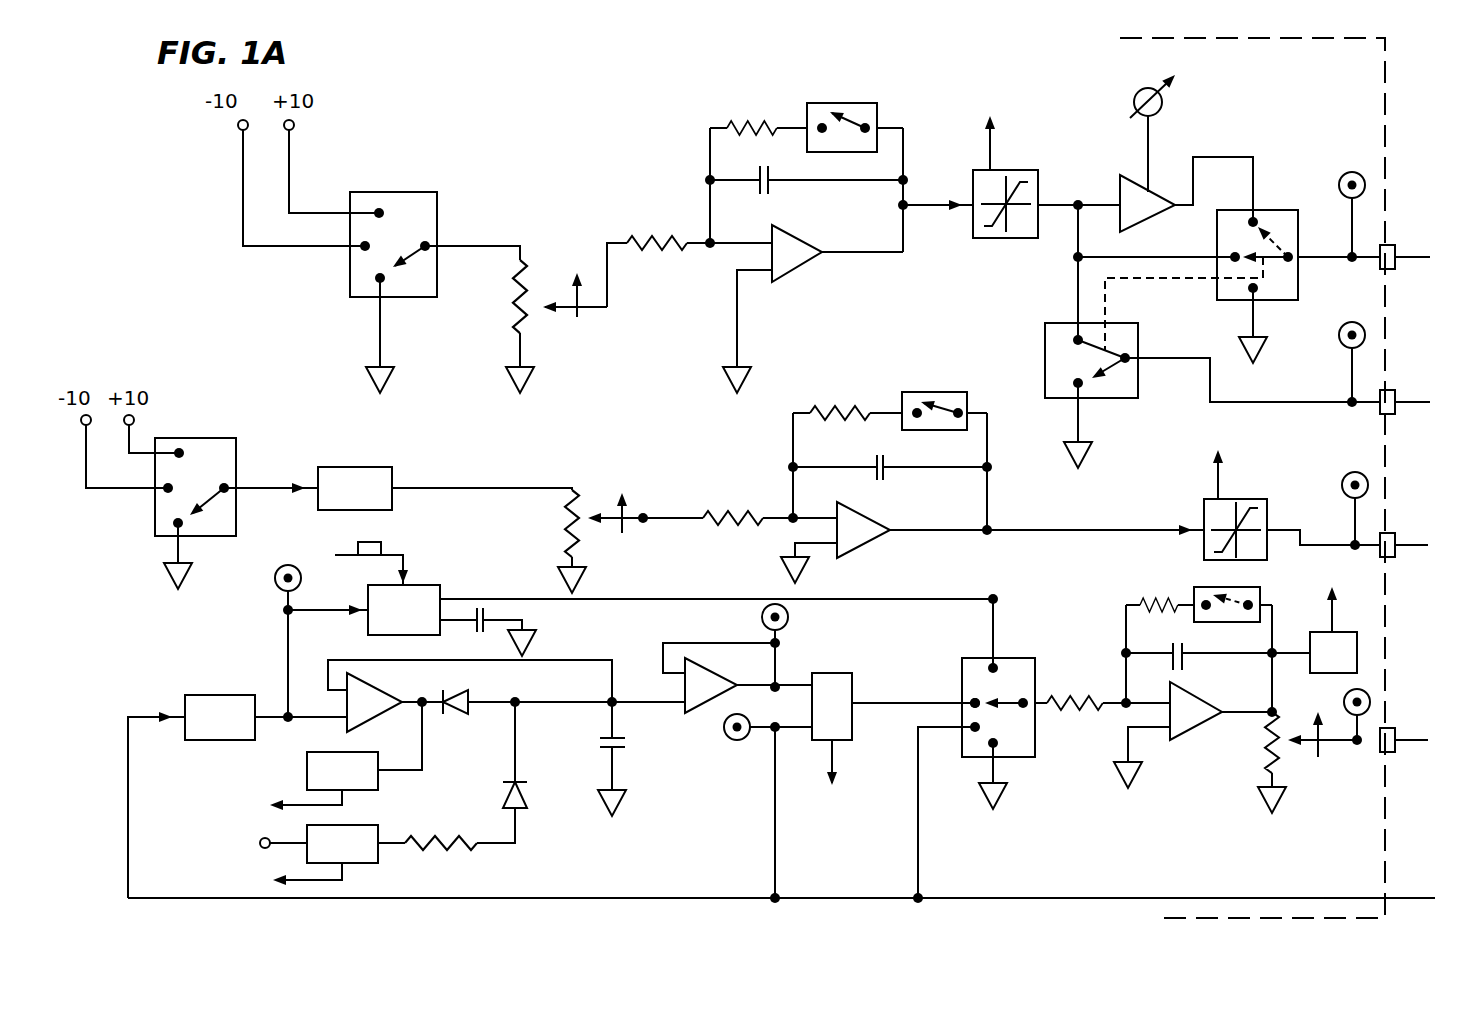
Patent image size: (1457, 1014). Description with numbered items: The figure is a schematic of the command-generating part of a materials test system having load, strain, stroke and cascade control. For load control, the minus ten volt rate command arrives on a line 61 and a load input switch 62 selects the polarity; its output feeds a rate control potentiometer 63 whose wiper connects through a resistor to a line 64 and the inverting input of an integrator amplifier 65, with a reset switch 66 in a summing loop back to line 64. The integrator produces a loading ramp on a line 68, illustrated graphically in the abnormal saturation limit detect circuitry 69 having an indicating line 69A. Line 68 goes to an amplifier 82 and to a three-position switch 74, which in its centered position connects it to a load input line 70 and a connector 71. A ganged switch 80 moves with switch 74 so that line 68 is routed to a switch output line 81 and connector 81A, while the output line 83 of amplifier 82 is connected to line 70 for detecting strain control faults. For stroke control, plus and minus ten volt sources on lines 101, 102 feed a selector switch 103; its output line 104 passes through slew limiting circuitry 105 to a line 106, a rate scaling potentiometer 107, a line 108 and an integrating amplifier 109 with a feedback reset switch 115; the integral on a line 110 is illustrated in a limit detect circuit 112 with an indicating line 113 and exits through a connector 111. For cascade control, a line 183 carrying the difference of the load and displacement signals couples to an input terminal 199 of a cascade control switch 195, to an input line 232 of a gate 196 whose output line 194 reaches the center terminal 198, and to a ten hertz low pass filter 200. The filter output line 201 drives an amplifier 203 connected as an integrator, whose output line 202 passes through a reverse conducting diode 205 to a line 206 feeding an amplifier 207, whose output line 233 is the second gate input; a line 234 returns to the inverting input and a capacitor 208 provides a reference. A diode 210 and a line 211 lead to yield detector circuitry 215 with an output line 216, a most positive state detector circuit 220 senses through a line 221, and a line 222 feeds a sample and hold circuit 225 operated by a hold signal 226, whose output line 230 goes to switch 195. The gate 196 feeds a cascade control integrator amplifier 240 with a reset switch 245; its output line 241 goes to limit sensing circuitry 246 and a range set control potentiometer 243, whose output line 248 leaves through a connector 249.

The rate command line 61 is at (300, 210).
The load input switch 62 is at (412, 192).
The potentiometer 63 is at (535, 265).
The line 64 is at (730, 243).
The integrator amplifier 65 is at (800, 272).
The reset switch 66 is at (843, 104).
The line 68 is at (932, 212).
The abnormal saturation limit detect circuitry 69 is at (1025, 168).
The line 69A is at (982, 157).
The load input line 70 is at (1362, 262).
The connector 71 is at (1397, 247).
The switch 74 is at (1282, 208).
The switch 80 is at (1045, 365).
The switch output line 81 is at (1210, 360).
The connector 81A is at (1397, 395).
The amplifier 82 is at (1165, 188).
The output line 83 is at (1243, 157).
The line 101 is at (135, 437).
The line 102 is at (120, 492).
The selector switch 103 is at (218, 438).
The line 104 is at (268, 486).
The slew limiting circuitry 105 is at (382, 467).
The line 106 is at (532, 487).
The rate scaling potentiometer 107 is at (566, 525).
The line 108 is at (673, 516).
The integrating amplifier 109 is at (865, 543).
The line 110 is at (1075, 528).
The connector 111 is at (1397, 535).
The limit detect circuit 112 is at (1204, 548).
The line 113 is at (1212, 470).
The feedback reset switch 115 is at (958, 392).
The line 183 is at (1205, 897).
The line 194 is at (892, 705).
The cascade control switch 195 is at (1040, 652).
The gate 196 is at (855, 672).
The center terminal 198 is at (970, 700).
The input terminal 199 is at (975, 733).
The low pass filter 200 is at (205, 694).
The output line 201 is at (338, 718).
The output line 202 is at (411, 708).
The amplifier 203 is at (382, 690).
The reverse conducting diode 205 is at (452, 715).
The line 206 is at (570, 705).
The amplifier 207 is at (705, 705).
The capacitor 208 is at (628, 742).
The diode 210 is at (530, 790).
The line 211 is at (495, 847).
The yield detector circuitry 215 is at (380, 858).
The output line 216 is at (328, 885).
The most positive state detector circuit 220 is at (307, 773).
The line 221 is at (425, 763).
The line 222 is at (288, 634).
The sample and hold circuit 225 is at (425, 585).
The hold signal 226 is at (383, 545).
The output line 230 is at (640, 597).
The input line 232 is at (790, 730).
The output line 233 is at (795, 685).
The line 234 is at (578, 660).
The cascade control integrator amplifier 240 is at (1195, 729).
The output line 241 is at (1272, 680).
The range set control potentiometer 243 is at (1258, 755).
The reset switch 245 is at (1194, 596).
The limit sensing circuitry 246 is at (1357, 655).
The output line 248 is at (1340, 742).
The connector 249 is at (1397, 730).